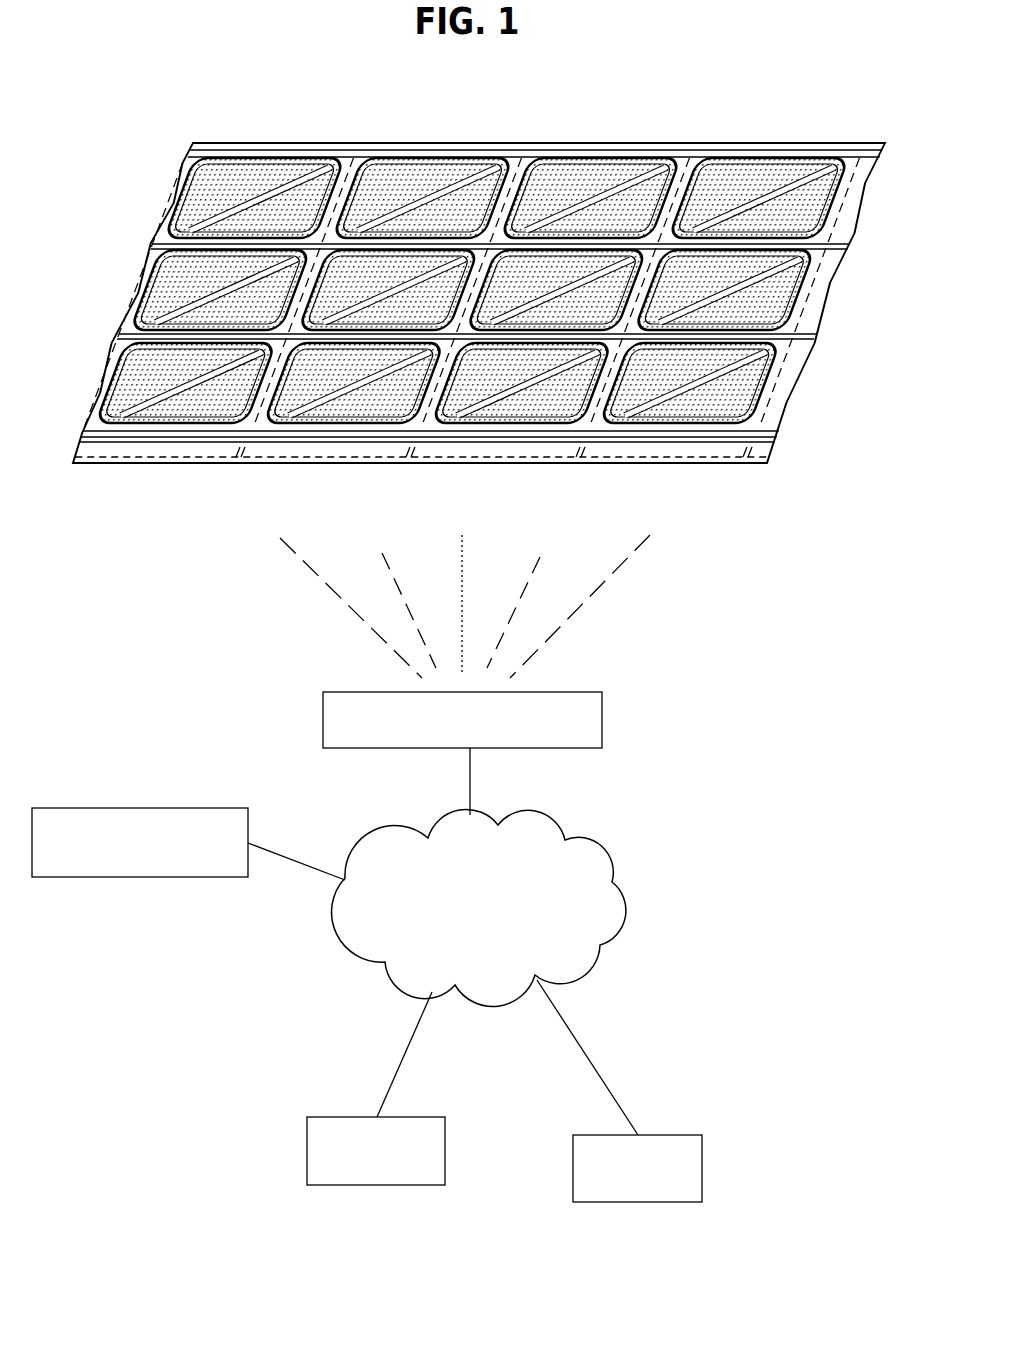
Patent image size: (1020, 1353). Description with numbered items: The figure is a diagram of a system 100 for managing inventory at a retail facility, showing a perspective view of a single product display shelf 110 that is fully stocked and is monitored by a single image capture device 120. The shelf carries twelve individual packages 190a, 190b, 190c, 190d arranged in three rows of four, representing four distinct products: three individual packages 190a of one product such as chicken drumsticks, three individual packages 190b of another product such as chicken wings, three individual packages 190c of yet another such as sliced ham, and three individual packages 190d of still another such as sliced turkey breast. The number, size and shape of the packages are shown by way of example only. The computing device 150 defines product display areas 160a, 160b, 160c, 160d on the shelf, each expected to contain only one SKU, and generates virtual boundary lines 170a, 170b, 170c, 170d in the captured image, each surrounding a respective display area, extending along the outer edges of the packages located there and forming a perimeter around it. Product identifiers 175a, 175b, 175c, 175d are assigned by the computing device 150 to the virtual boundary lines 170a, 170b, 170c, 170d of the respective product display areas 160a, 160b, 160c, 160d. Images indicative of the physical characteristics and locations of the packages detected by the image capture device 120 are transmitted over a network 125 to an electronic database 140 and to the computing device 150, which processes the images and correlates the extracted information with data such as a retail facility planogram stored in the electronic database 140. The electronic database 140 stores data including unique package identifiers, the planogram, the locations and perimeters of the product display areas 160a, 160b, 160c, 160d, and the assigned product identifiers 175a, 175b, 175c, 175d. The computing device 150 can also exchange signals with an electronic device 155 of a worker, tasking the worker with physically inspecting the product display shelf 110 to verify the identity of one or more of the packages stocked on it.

The system 100 is at (152, 125).
The product display shelf 110 is at (813, 330).
The image capture device 120 is at (605, 722).
The network 125 is at (625, 845).
The electronic database 140 is at (377, 1186).
The computing device 150 is at (655, 1203).
The electronic device 155 is at (156, 878).
The product display area 160a is at (96, 447).
The product display area 160b is at (264, 447).
The product display area 160c is at (434, 447).
The product display area 160d is at (604, 447).
The virtual boundary line 170a is at (331, 165).
The virtual boundary line 170b is at (490, 165).
The virtual boundary line 170c is at (668, 165).
The virtual boundary line 170d is at (853, 193).
The product identifier 175a is at (190, 447).
The product identifier 175b is at (365, 447).
The product identifier 175c is at (535, 447).
The product identifier 175d is at (705, 447).
The individual package 190a is at (244, 178).
The individual package 190b is at (405, 178).
The individual package 190c is at (585, 178).
The individual package 190d is at (768, 175).